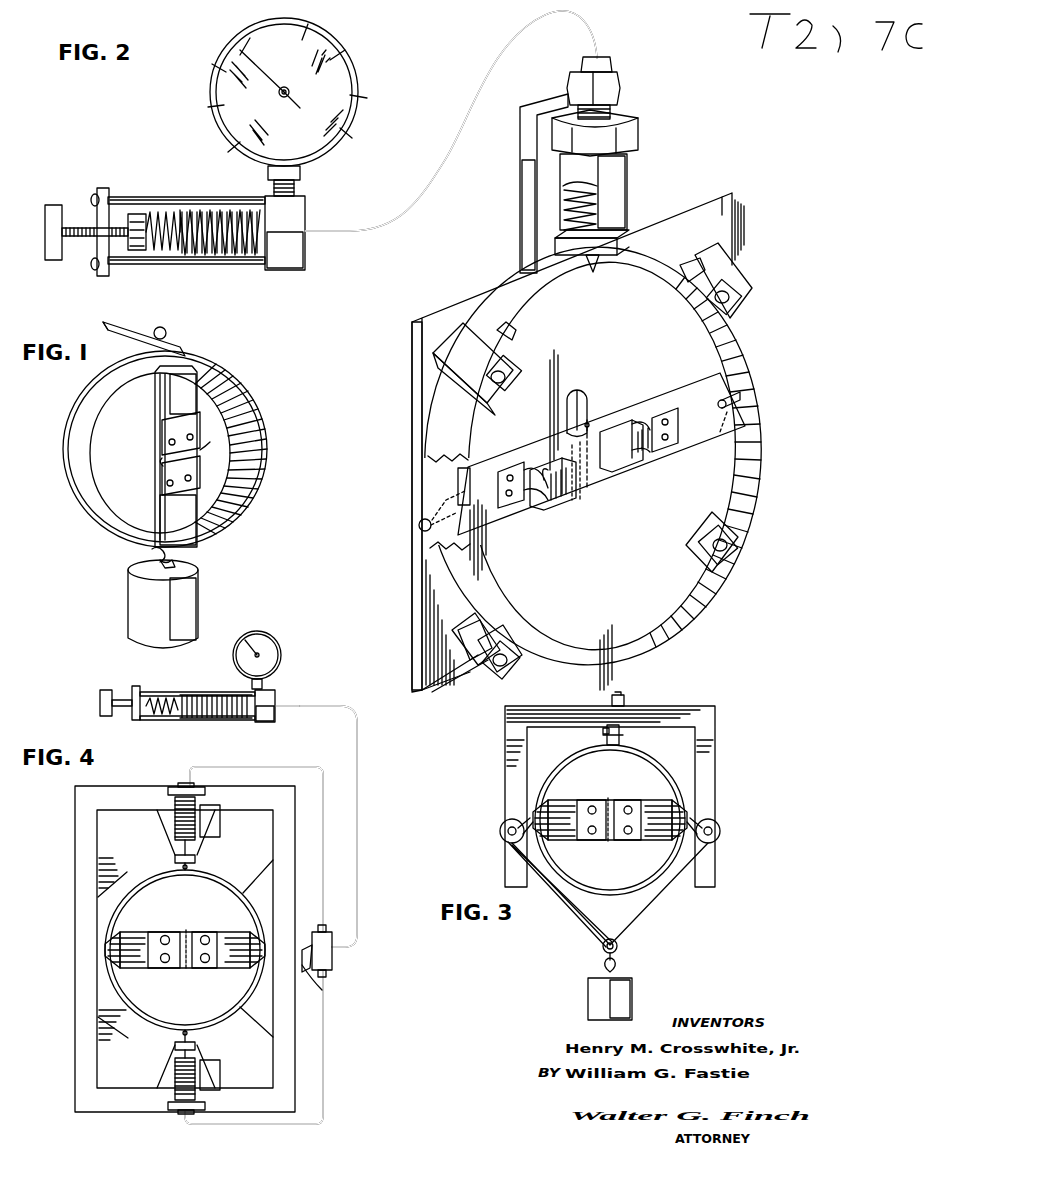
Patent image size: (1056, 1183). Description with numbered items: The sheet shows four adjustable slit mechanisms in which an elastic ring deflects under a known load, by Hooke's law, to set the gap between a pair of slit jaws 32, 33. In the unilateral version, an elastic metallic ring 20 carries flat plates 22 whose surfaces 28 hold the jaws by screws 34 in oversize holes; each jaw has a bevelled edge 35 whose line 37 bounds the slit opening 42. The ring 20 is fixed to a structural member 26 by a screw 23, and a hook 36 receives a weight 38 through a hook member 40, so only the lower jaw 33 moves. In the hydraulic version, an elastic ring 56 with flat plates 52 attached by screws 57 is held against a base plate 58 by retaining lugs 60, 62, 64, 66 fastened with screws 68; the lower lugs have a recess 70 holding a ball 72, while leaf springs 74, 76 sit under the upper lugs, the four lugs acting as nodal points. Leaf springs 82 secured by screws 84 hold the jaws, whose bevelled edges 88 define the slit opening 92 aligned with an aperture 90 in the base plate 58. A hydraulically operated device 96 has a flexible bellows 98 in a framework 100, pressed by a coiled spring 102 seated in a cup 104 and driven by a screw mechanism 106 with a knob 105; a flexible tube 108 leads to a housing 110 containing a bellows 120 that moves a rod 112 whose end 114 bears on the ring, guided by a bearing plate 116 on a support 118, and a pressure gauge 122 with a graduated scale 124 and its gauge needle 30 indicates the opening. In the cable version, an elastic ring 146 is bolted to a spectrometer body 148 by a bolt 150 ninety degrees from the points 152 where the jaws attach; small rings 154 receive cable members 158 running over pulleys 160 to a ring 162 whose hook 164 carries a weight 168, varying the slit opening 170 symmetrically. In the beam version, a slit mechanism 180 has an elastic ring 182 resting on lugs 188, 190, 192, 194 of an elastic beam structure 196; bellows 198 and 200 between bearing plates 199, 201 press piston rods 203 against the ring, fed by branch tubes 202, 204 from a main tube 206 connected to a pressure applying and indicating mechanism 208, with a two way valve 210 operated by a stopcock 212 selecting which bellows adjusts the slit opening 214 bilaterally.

In FIG. 1, the elastic metallic ring 20 is at (250, 508).
In FIG. 1, the flat plates 22 is at (165, 405).
In FIG. 3, the flat plates 22 is at (565, 838).
In FIG. 4, the flat plates 22 is at (141, 970).
In FIG. 1, the screw 23 is at (167, 333).
In FIG. 1, the structural member 26 is at (140, 322).
In FIG. 1, the surface 28 is at (190, 385).
In FIG. 2, the gauge needle 30 is at (279, 72).
In FIG. 1, the slit jaw 32 is at (190, 428).
In FIG. 3, the slit jaw 32 is at (591, 840).
In FIG. 4, the slit jaw 32 is at (170, 970).
In FIG. 1, the slit jaw 33 is at (195, 468).
In FIG. 3, the slit jaw 33 is at (628, 840).
In FIG. 4, the slit jaw 33 is at (205, 970).
In FIG. 1, the screws 34 is at (168, 441).
In FIG. 3, the screws 34 is at (592, 805).
In FIG. 4, the screws 34 is at (163, 935).
In FIG. 1, the bevelled edges 35 is at (196, 452).
In FIG. 1, the hook 36 is at (152, 552).
In FIG. 1, the line 37 is at (110, 486).
In FIG. 1, the weight 38 is at (200, 588).
In FIG. 1, the hook member 40 is at (175, 560).
In FIG. 1, the slit opening 42 is at (160, 460).
In FIG. 1, the flat plates 52 is at (500, 515).
In FIG. 1, the elastic ring 56 is at (760, 424).
In FIG. 1, the screws 57 is at (420, 528).
In FIG. 1, the base plate 58 is at (455, 672).
In FIG. 1, the retaining lug 60 is at (720, 565).
In FIG. 1, the retaining lug 62 is at (488, 680).
In FIG. 1, the retaining lug 64 is at (470, 345).
In FIG. 1, the retaining lug 66 is at (725, 265).
In FIG. 1, the screws 68 is at (506, 378).
In FIG. 1, the socket or recess 70 is at (455, 640).
In FIG. 1, the ball 72 is at (478, 640).
In FIG. 1, the leaf spring 74 is at (510, 332).
In FIG. 1, the leaf spring 76 is at (690, 272).
In FIG. 1, the leaf springs 82 is at (542, 505).
In FIG. 1, the screws 84 is at (512, 470).
In FIG. 1, the bevelled edge 88 is at (588, 423).
In FIG. 1, the aperture or opening 90 is at (585, 395).
In FIG. 1, the slit opening 92 is at (582, 488).
In FIG. 2, the hydraulically operated device 96 is at (370, 172).
In FIG. 2, the flexible bellows 98 is at (240, 262).
In FIG. 4, the flexible bellows 98 is at (235, 720).
In FIG. 2, the framework 100 is at (200, 264).
In FIG. 4, the framework 100 is at (196, 721).
In FIG. 2, the compressed coiled spring 102 is at (160, 214).
In FIG. 4, the compressed coiled spring 102 is at (165, 697).
In FIG. 2, the cup 104 is at (137, 252).
In FIG. 2, the knob 105 is at (52, 204).
In FIG. 4, the knob 105 is at (105, 690).
In FIG. 2, the screw operated mechanism 106 is at (78, 226).
In FIG. 4, the screw operated mechanism 106 is at (128, 699).
In FIG. 2, the flexible tube 108 is at (358, 238).
In FIG. 2, the housing 110 is at (622, 178).
In FIG. 2, the rod 112 is at (553, 243).
In FIG. 2, the end of rod 114 is at (589, 264).
In FIG. 2, the bearing plate 116 is at (608, 240).
In FIG. 2, the support 118 is at (522, 197).
In FIG. 2, the bellows 120 is at (568, 192).
In FIG. 2, the pressure gauge 122 is at (358, 76).
In FIG. 4, the pressure gauge 122 is at (270, 637).
In FIG. 2, the graduated scale 124 is at (331, 57).
In FIG. 3, the elastic ring 146 is at (610, 895).
In FIG. 3, the spectrometer body 148 is at (510, 768).
In FIG. 3, the screw or bolt 150 is at (622, 736).
In FIG. 3, the points 152 is at (620, 698).
In FIG. 3, the small rings 154 is at (530, 818).
In FIG. 3, the rope or cable members 158 is at (565, 905).
In FIG. 3, the pulleys 160 is at (500, 831).
In FIG. 3, the ring 162 is at (618, 946).
In FIG. 3, the hook 164 is at (605, 962).
In FIG. 3, the weight 168 is at (633, 992).
In FIG. 3, the slit opening 170 is at (611, 805).
In FIG. 4, the test apparatus 180 is at (74, 965).
In FIG. 4, the elastic ring 182 is at (188, 1028).
In FIG. 4, the lug 188 is at (248, 1030).
In FIG. 4, the lug 190 is at (113, 1020).
In FIG. 4, the lug 192 is at (123, 885).
In FIG. 4, the lug 194 is at (243, 885).
In FIG. 4, the elastic beam structure 196 is at (80, 858).
In FIG. 4, the bellows 198 is at (176, 805).
In FIG. 4, the bearing plates 199 is at (192, 860).
In FIG. 4, the bellows 200 is at (172, 1090).
In FIG. 4, the bearing plates 201 is at (200, 790).
In FIG. 4, the flexible branch tube 202 is at (277, 1126).
In FIG. 4, the piston rods 203 is at (175, 848).
In FIG. 4, the flexible branch tube 204 is at (272, 767).
In FIG. 4, the main flexible tube 206 is at (357, 820).
In FIG. 4, the pressure applying and indicating mechanism 208 is at (298, 700).
In FIG. 4, the two way valve 210 is at (332, 962).
In FIG. 4, the stopcock 212 is at (322, 990).
In FIG. 4, the slit opening 214 is at (186, 932).